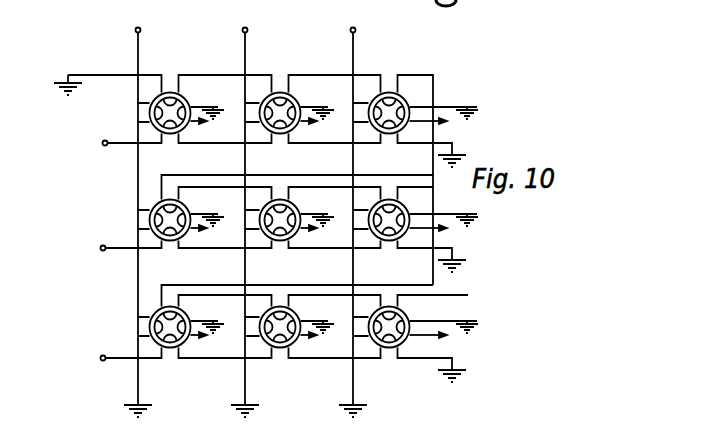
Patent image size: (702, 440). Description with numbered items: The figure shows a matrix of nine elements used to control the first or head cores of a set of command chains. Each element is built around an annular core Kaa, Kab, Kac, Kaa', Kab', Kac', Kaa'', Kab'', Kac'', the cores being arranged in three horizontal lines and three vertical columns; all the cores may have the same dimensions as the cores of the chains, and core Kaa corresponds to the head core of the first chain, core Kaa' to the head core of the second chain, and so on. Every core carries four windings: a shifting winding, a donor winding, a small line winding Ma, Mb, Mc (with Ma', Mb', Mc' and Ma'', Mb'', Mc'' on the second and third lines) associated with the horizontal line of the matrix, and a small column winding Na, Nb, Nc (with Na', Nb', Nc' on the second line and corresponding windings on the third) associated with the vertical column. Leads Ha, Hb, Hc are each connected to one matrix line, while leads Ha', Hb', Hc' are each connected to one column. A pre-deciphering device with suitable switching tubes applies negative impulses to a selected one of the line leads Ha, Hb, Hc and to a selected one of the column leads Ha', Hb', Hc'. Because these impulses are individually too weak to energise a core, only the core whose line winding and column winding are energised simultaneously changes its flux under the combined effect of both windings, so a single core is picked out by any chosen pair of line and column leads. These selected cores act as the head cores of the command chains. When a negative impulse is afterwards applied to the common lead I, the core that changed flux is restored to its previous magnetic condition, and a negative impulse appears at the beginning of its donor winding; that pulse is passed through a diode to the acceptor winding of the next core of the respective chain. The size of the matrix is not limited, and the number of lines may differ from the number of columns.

The column lead Ha' is at (139, 210).
The column lead Hb' is at (246, 210).
The column lead Hc' is at (354, 210).
The line lead Ha is at (119, 142).
The line lead Hb is at (119, 247).
The line lead Hc is at (119, 357).
The line winding Ma is at (170, 130).
The line winding Mb is at (280, 130).
The line winding Mc is at (389, 130).
The line winding Ma' is at (170, 237).
The line winding Mb' is at (280, 237).
The line winding Mc' is at (389, 237).
The line winding Ma'' is at (171, 344).
The line winding Mb'' is at (281, 344).
The line winding Mc'' is at (390, 344).
The column winding Na is at (132, 111).
The column winding Nb is at (241, 111).
The column winding Nc is at (349, 111).
The column winding Na' is at (132, 218).
The column winding Nb' is at (241, 218).
The column winding Nc' is at (349, 218).
The annular core Kaa is at (203, 131).
The annular core Kab is at (314, 131).
The annular core Kac is at (426, 131).
The annular core Kaa' is at (205, 238).
The annular core Kab' is at (316, 238).
The annular core Kac' is at (426, 238).
The annular core Kaa'' is at (207, 345).
The annular core Kab'' is at (317, 345).
The annular core Kac'' is at (426, 345).
The lead I is at (439, 298).